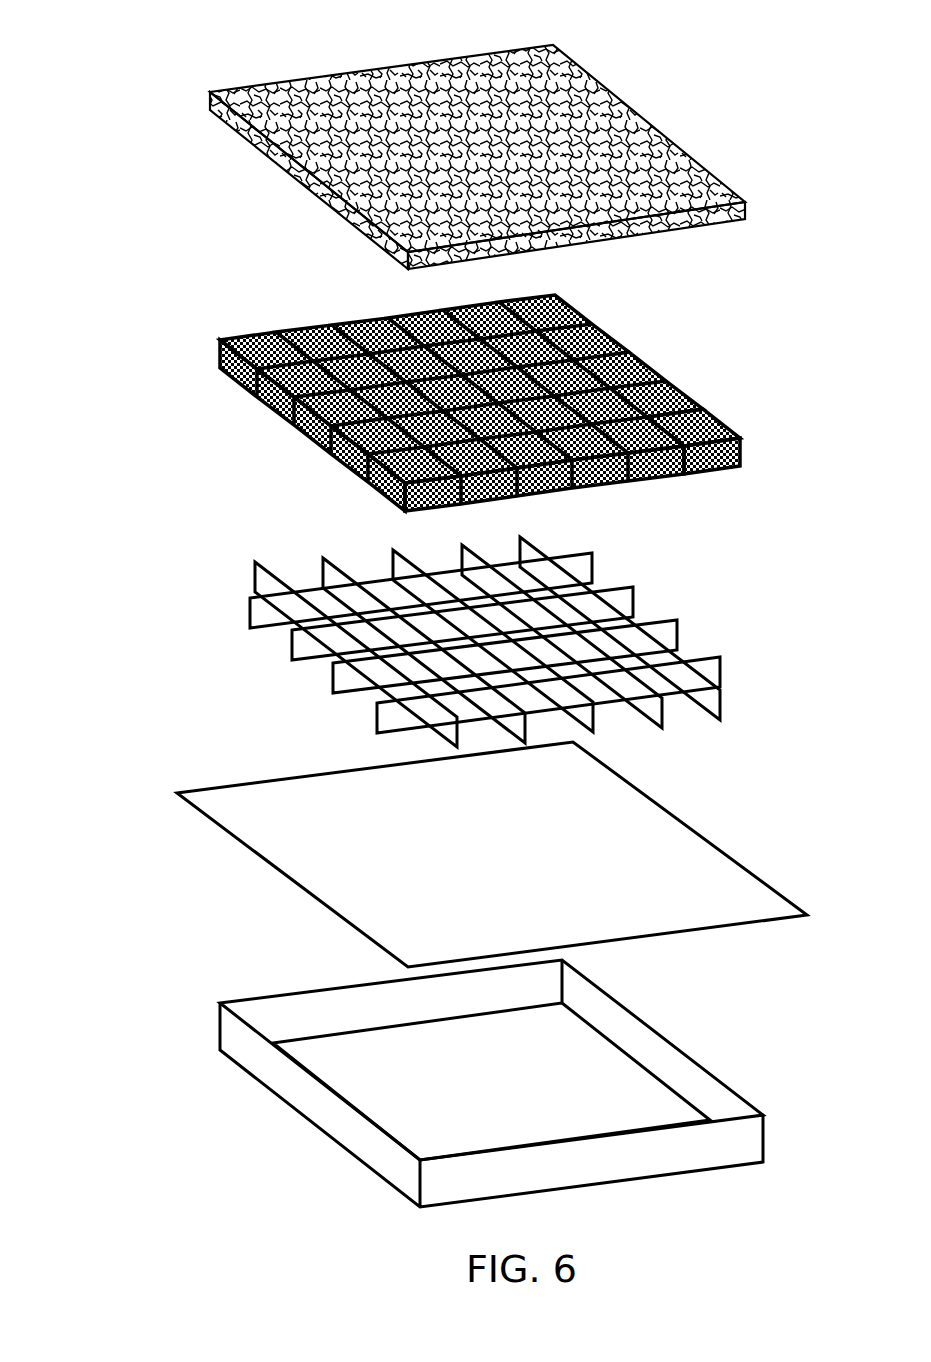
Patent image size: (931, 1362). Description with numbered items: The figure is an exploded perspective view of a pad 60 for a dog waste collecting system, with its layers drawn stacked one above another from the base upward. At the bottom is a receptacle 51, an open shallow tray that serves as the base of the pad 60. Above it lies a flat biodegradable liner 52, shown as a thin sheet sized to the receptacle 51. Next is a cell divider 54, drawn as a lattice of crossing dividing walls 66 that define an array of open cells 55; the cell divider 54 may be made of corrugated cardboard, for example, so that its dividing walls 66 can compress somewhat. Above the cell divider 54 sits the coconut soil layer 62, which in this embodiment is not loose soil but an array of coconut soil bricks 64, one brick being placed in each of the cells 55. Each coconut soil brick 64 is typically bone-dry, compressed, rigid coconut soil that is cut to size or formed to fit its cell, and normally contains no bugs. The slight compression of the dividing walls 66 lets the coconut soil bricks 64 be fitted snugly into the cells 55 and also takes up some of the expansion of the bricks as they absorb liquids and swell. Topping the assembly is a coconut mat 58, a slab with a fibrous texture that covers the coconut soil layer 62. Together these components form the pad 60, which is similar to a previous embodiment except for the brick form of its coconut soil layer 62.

The pad 60 is at (112, 60).
The coconut mat 58 is at (663, 140).
The coconut soil layer 62 is at (190, 397).
The coconut soil brick 64 is at (732, 435).
The cell divider 54 is at (677, 630).
The cell 55 is at (325, 670).
The dividing wall 66 is at (720, 707).
The biodegradable liner 52 is at (745, 867).
The receptacle 51 is at (698, 1062).